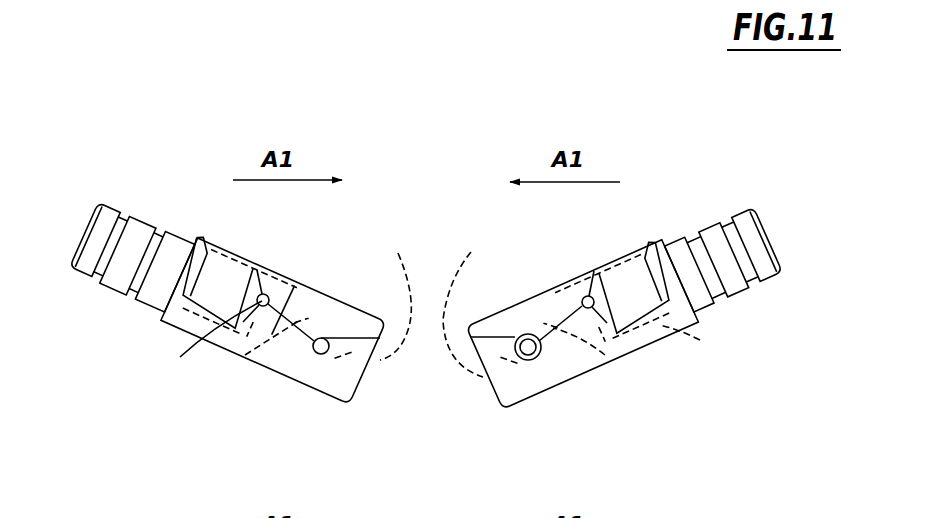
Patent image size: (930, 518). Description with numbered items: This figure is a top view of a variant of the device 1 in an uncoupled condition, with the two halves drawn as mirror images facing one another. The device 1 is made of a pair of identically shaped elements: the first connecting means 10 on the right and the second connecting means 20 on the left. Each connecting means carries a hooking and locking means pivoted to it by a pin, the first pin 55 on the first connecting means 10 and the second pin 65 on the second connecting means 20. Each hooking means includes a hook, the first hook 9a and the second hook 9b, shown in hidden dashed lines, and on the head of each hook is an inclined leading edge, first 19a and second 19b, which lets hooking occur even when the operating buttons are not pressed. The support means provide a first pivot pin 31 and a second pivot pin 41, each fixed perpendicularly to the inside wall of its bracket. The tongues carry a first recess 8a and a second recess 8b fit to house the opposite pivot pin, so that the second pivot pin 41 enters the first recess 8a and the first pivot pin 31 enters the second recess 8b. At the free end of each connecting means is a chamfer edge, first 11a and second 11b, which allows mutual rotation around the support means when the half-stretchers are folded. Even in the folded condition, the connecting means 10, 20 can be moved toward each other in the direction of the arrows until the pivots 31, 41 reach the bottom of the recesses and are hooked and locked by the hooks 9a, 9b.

The device 1 is at (157, 107).
The first connecting means 10 is at (763, 183).
The second connecting means 20 is at (105, 178).
The first recess 8a is at (485, 340).
The second recess 8b is at (367, 352).
The first hook 9a is at (605, 355).
The second hook 9b is at (245, 355).
The first chamfer edge 11a is at (505, 305).
The second chamfer edge 11b is at (330, 354).
The first inclined leading edge 19a is at (476, 296).
The second inclined leading edge 19b is at (395, 288).
The first pivot pin 31 is at (541, 353).
The second pivot pin 41 is at (315, 351).
The first pin 55 is at (700, 340).
The second pin 65 is at (180, 357).